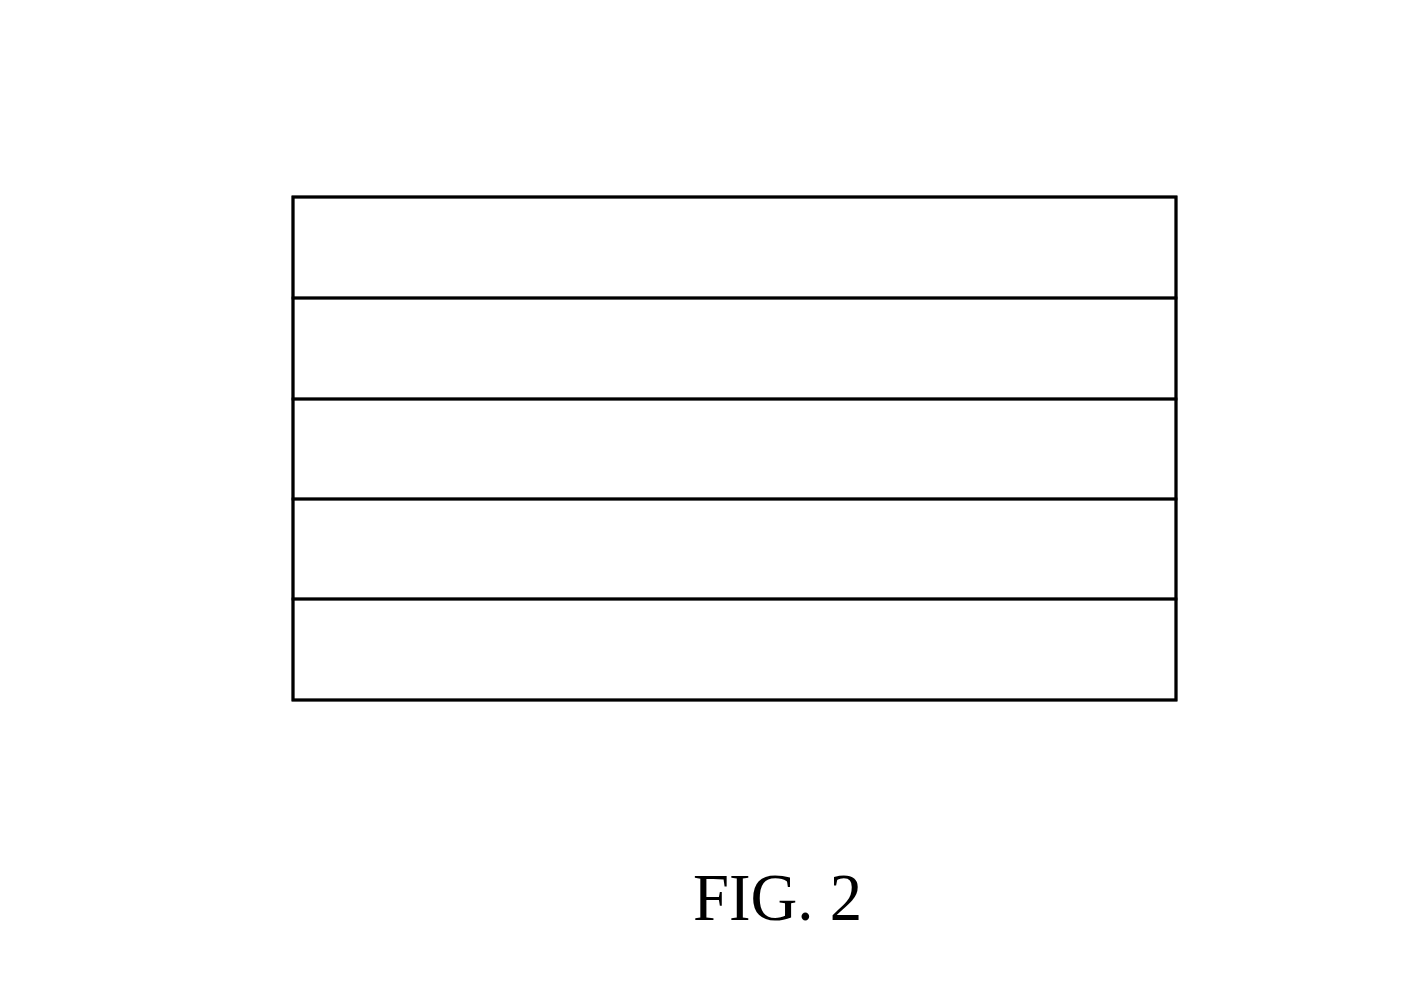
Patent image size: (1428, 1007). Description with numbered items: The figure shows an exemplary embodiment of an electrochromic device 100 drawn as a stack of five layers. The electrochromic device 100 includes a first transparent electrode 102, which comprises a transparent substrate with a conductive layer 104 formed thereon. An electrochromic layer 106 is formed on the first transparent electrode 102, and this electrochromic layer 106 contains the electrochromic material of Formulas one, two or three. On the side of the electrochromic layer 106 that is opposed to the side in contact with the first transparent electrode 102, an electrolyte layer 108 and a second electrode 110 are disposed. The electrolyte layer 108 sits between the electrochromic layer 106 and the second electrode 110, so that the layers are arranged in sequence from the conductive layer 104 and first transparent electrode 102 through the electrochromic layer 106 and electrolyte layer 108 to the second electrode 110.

The electrochromic device 100 is at (848, 409).
The first transparent electrode 102 is at (1123, 582).
The conductive layer 104 is at (357, 667).
The electrochromic layer 106 is at (325, 467).
The electrolyte layer 108 is at (308, 365).
The second electrode 110 is at (343, 232).